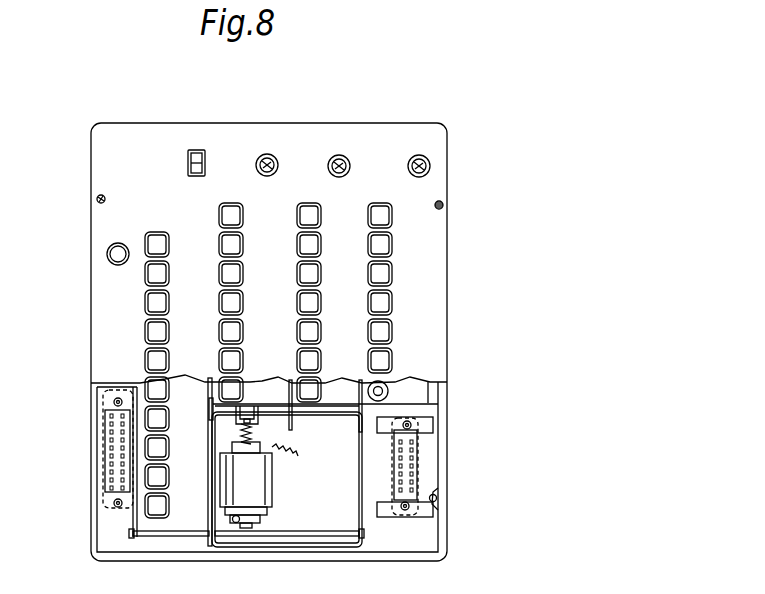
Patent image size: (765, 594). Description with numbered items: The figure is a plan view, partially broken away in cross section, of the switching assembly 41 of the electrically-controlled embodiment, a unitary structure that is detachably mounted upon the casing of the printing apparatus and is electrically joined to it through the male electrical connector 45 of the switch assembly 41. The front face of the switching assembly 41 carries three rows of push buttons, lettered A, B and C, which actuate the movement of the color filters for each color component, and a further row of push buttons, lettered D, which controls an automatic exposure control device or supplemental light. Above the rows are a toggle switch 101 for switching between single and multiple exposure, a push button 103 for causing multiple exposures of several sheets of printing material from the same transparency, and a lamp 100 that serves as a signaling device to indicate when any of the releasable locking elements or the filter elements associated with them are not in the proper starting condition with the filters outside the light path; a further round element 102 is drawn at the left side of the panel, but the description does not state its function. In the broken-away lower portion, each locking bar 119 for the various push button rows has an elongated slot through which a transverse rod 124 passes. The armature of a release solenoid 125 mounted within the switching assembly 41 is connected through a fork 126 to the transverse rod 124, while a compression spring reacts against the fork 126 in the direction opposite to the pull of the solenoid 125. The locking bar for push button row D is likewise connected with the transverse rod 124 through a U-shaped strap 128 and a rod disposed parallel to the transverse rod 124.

The switch assembly 41 is at (424, 366).
The male electrical connector 45 is at (107, 438).
The lamp 100 is at (341, 154).
The toggle switch 101 is at (190, 149).
The indicator lamp 102 is at (107, 254).
The push button 103 is at (264, 153).
The locking bar 119 is at (212, 384).
The transverse rod 124 is at (327, 423).
The release solenoid 125 is at (248, 486).
The fork 126 is at (249, 422).
The U-shaped strap 128 is at (358, 462).